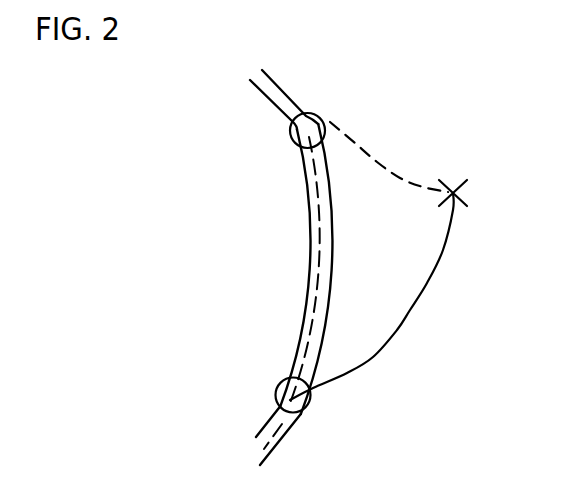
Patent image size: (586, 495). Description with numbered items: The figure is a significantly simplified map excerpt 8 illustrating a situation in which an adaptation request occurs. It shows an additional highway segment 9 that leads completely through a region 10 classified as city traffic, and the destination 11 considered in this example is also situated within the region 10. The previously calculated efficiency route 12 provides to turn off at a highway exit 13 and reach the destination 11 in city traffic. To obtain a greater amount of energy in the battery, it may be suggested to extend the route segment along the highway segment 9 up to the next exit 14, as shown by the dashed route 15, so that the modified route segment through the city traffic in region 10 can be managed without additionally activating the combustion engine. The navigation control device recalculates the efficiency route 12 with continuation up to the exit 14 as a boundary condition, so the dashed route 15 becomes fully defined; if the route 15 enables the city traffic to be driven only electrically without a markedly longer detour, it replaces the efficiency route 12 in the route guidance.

The map excerpt 8 is at (452, 93).
The highway segment 9 is at (280, 92).
The region 10 is at (398, 126).
The destination 11 is at (455, 193).
The efficiency route 12 is at (410, 310).
The highway exit 13 is at (290, 400).
The exit 14 is at (292, 140).
The dashed route 15 is at (320, 257).